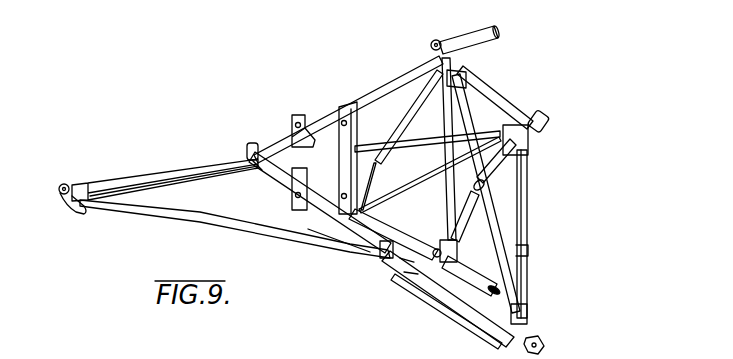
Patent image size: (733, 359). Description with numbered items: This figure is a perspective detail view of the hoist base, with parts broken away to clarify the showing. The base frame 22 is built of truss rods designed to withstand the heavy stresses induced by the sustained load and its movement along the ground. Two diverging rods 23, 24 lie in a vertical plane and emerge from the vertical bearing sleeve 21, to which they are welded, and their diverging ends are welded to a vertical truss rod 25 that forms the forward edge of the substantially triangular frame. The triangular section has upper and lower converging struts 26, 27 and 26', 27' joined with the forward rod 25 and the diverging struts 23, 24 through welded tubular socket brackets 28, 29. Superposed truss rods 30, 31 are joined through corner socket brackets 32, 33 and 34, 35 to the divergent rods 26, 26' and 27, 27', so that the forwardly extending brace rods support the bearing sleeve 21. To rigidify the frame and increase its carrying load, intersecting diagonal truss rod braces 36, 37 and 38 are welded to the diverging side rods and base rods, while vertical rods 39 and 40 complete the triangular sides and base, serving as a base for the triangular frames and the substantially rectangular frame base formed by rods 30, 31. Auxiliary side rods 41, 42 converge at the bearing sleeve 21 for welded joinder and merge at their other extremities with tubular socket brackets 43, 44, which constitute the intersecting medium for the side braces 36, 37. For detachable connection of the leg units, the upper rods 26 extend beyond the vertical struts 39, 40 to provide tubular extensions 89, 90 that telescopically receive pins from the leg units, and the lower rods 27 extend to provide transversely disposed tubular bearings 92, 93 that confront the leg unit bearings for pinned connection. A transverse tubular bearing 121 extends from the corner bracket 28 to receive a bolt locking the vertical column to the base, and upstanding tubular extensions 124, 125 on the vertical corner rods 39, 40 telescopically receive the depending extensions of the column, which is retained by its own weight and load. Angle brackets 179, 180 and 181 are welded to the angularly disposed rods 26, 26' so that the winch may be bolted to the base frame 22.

The vertical bearing sleeve 21 is at (68, 207).
The base frame 22 is at (534, 211).
The diverging rod 23 is at (120, 180).
The diverging rod 24 is at (115, 213).
The vertical truss rod 25 is at (282, 187).
The upper converging strut 26 is at (348, 98).
The upper converging strut 26' is at (393, 232).
The lower converging strut 27 is at (430, 175).
The lower converging strut 27' is at (448, 299).
The tubular socket bracket 28 is at (262, 176).
The tubular socket bracket 29 is at (327, 230).
The truss rod 30 is at (460, 86).
The truss rod 31 is at (522, 190).
The corner socket bracket 32 is at (459, 63).
The corner socket bracket 33 is at (457, 253).
The corner socket bracket 34 is at (528, 148).
The corner socket bracket 35 is at (528, 320).
The diagonal truss rod brace 36 is at (411, 112).
The diagonal truss rod brace 37 is at (442, 288).
The diagonal truss rod brace 38 is at (505, 231).
The vertical rod 39 is at (498, 102).
The vertical rod 40 is at (490, 303).
The auxiliary side rod 41 is at (193, 188).
The auxiliary side rod 42 is at (193, 216).
The tubular socket bracket 43 is at (397, 149).
The tubular socket bracket 44 is at (382, 244).
The tubular extension 89 is at (471, 36).
The tubular extension 90 is at (480, 278).
The tubular bearing 92 is at (544, 114).
The tubular bearing 93 is at (545, 346).
The transverse tubular bearing 121 is at (248, 148).
The upstanding tubular extension 124 is at (436, 40).
The upstanding tubular extension 125 is at (523, 252).
The angle bracket 179 is at (292, 125).
The angle bracket 180 is at (295, 212).
The angle bracket 181 is at (349, 106).